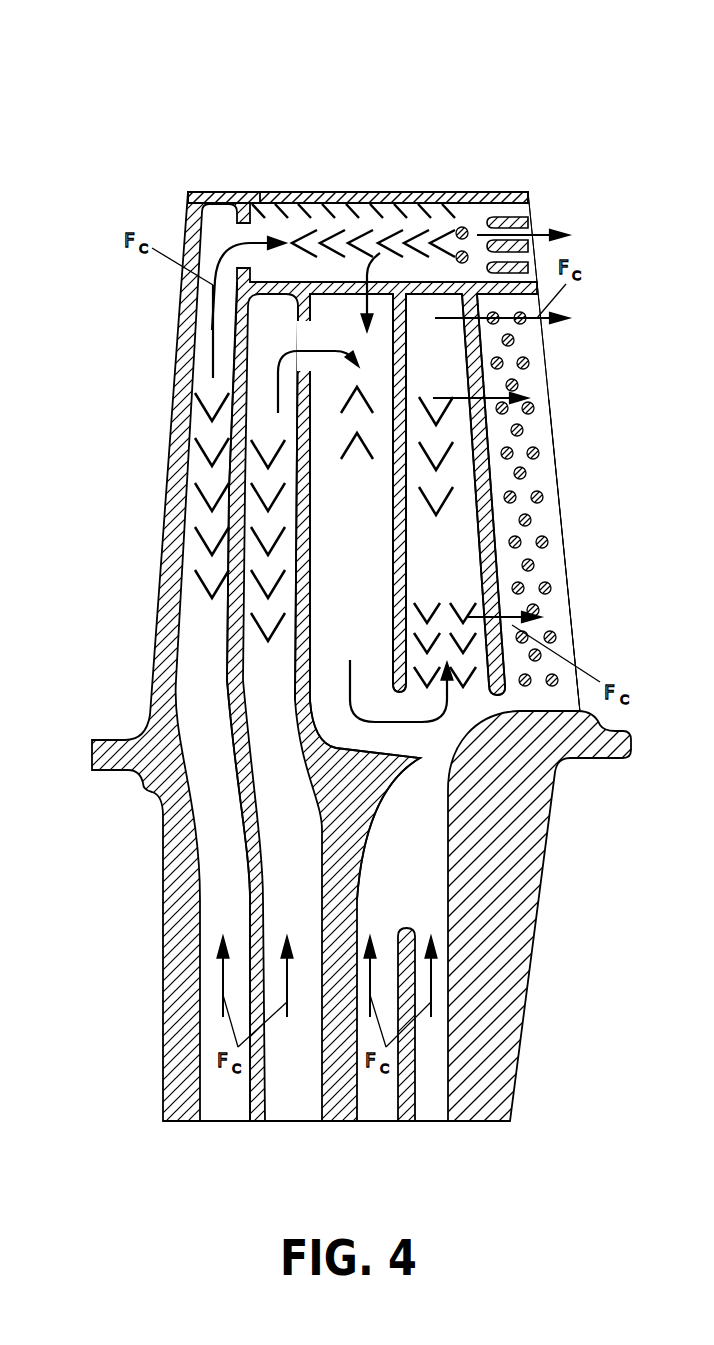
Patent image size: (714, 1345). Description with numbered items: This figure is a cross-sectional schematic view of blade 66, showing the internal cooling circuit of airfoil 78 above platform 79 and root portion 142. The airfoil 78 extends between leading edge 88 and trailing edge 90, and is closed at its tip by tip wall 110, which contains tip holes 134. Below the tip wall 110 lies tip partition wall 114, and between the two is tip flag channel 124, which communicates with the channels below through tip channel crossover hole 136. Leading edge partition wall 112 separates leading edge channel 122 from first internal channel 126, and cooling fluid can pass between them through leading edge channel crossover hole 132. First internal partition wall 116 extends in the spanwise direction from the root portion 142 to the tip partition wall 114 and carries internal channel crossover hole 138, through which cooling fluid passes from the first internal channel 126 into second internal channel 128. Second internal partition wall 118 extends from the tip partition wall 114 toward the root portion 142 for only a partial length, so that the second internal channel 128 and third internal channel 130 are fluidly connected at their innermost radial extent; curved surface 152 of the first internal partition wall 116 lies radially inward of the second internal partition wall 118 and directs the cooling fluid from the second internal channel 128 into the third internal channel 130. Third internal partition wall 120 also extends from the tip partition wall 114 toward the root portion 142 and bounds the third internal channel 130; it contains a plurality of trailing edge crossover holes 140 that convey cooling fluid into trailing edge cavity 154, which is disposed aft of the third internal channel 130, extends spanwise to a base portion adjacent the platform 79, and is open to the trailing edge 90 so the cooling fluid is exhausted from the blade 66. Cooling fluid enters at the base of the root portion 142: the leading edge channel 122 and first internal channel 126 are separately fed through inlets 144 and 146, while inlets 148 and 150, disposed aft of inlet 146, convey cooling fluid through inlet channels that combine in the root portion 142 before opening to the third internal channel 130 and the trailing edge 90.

The blade 66 is at (532, 78).
The airfoil 78 is at (127, 410).
The platform 79 is at (116, 733).
The leading edge 88 is at (158, 541).
The trailing edge 90 is at (562, 521).
The tip wall 110 is at (468, 198).
The leading edge partition wall 112 is at (230, 697).
The tip partition wall 114 is at (283, 280).
The first internal partition wall 116 is at (310, 588).
The second internal partition wall 118 is at (392, 530).
The third internal partition wall 120 is at (493, 532).
The leading edge channel 122 is at (224, 644).
The tip flag channel 124 is at (340, 212).
The first internal channel 126 is at (284, 680).
The second internal channel 128 is at (364, 635).
The third internal channel 130 is at (457, 579).
The leading edge channel crossover hole 132 is at (250, 228).
The tip holes 134 is at (222, 192).
The tip channel crossover hole 136 is at (380, 253).
The internal channel crossover hole 138 is at (313, 342).
The trailing edge crossover holes 140 is at (483, 437).
The root portion 142 is at (508, 1018).
The inlet 144 is at (228, 1125).
The inlet 146 is at (293, 1125).
The inlet 148 is at (377, 1125).
The inlet 150 is at (440, 1125).
The curved surface 152 is at (362, 757).
The trailing edge cavity 154 is at (547, 472).